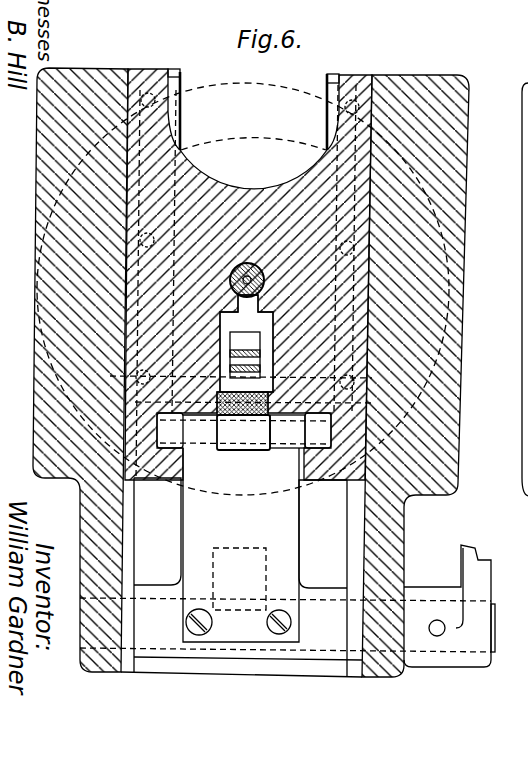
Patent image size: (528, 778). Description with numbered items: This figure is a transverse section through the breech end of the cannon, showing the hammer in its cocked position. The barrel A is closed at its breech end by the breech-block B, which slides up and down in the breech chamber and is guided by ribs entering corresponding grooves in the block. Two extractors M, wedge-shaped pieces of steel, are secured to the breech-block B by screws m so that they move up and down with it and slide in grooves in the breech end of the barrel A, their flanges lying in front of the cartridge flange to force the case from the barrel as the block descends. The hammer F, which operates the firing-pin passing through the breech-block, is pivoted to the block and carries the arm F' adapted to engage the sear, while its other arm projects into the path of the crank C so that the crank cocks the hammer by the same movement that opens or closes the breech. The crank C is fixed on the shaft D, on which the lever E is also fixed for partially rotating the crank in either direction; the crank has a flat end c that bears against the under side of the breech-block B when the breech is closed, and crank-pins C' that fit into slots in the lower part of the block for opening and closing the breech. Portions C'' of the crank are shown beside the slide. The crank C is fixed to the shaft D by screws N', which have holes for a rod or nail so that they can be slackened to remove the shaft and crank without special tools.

The barrel A is at (253, 120).
The breech-block B is at (248, 274).
The extractors M is at (181, 109).
The screws m is at (141, 100).
The hammer F is at (246, 327).
The piston packing f' is at (245, 355).
The arm of the hammer F' is at (242, 403).
The crank-pins C' is at (226, 432).
The slide valve ends C'' is at (244, 430).
The flat end of the crank c is at (287, 431).
The crank C is at (285, 562).
The screws N' is at (238, 622).
The lever E is at (447, 606).
The shaft D is at (496, 618).